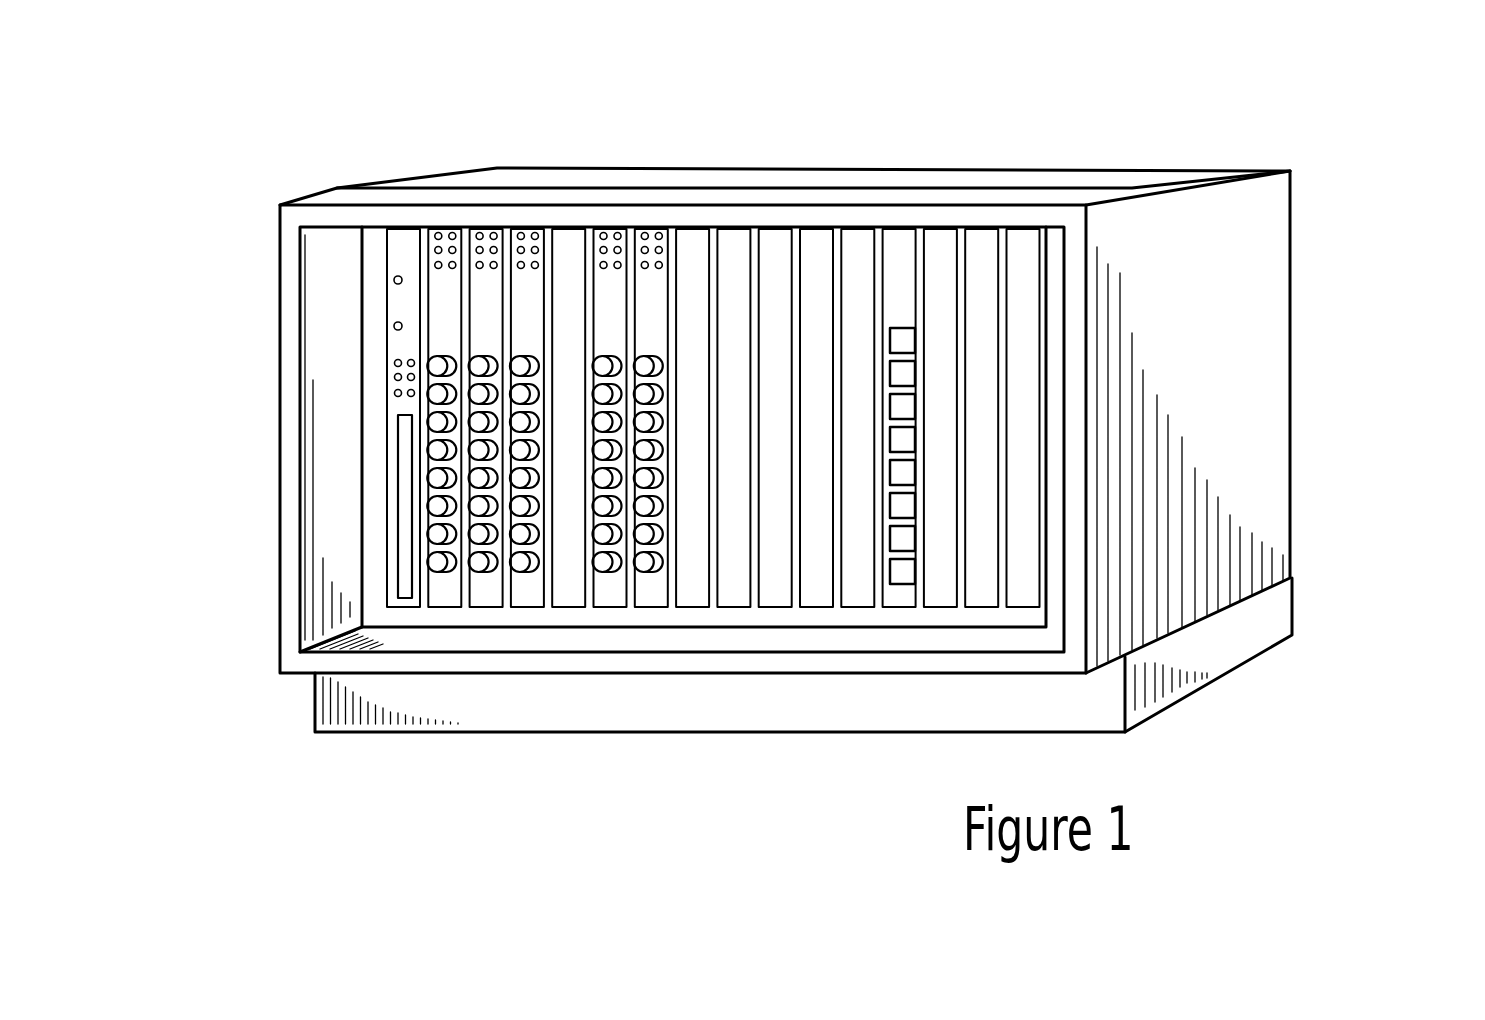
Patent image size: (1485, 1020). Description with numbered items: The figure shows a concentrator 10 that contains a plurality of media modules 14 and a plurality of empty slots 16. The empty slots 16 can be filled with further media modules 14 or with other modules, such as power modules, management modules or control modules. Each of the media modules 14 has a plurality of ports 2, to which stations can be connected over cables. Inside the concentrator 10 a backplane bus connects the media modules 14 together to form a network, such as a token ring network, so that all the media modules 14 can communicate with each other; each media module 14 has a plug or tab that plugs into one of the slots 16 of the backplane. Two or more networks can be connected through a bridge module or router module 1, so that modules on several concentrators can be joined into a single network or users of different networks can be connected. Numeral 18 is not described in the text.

The bridge module or router module 1 is at (897, 243).
The ports 2 is at (437, 365).
The concentrator 10 is at (1293, 290).
The media modules 14 is at (442, 592).
The empty slots 16 is at (567, 250).
The controller card 18 is at (402, 240).